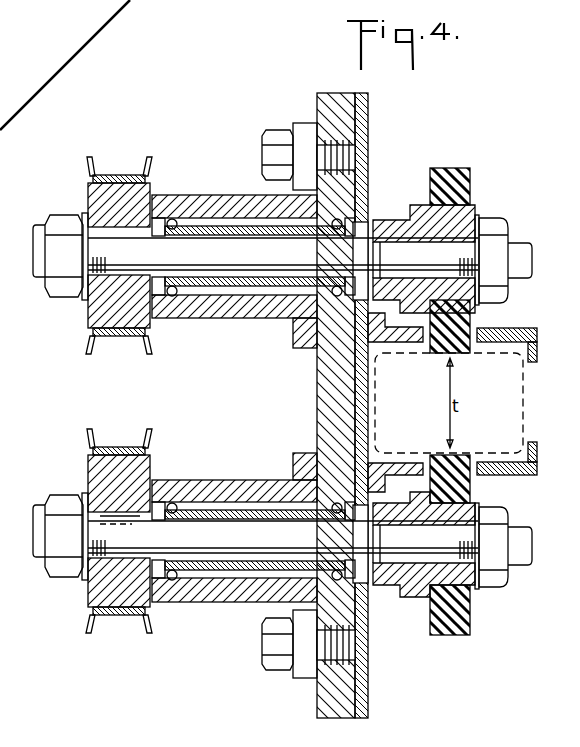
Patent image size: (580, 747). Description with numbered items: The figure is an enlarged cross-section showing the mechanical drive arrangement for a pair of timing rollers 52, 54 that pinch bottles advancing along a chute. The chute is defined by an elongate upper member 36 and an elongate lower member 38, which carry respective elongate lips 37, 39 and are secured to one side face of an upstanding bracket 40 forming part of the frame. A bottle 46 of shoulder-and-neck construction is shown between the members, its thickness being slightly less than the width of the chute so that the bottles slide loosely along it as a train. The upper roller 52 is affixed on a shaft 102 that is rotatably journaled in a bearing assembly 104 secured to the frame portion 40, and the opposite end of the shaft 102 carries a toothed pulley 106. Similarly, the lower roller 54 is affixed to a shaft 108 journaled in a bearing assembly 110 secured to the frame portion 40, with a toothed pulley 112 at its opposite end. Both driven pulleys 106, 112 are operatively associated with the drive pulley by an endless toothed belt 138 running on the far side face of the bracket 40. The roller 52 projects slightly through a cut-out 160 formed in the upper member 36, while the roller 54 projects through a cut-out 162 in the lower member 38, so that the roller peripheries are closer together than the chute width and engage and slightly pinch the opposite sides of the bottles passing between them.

The elongate upper member 36 is at (495, 330).
The elongate lip 37 is at (537, 352).
The elongate lower member 38 is at (512, 475).
The elongate lip 39 is at (526, 460).
The bracket 40 is at (384, 418).
The bottle 46 is at (392, 346).
The timing roller 52 is at (462, 172).
The timing roller 54 is at (440, 636).
The shaft 102 is at (403, 255).
The bearing assembly 104 is at (243, 200).
The toothed pulley 106 is at (100, 200).
The shaft 108 is at (410, 592).
The bearing assembly 110 is at (265, 480).
The toothed pulley 112 is at (105, 482).
The endless belt 138 is at (145, 178).
The cut-out 160 is at (472, 356).
The cut-out 162 is at (470, 458).